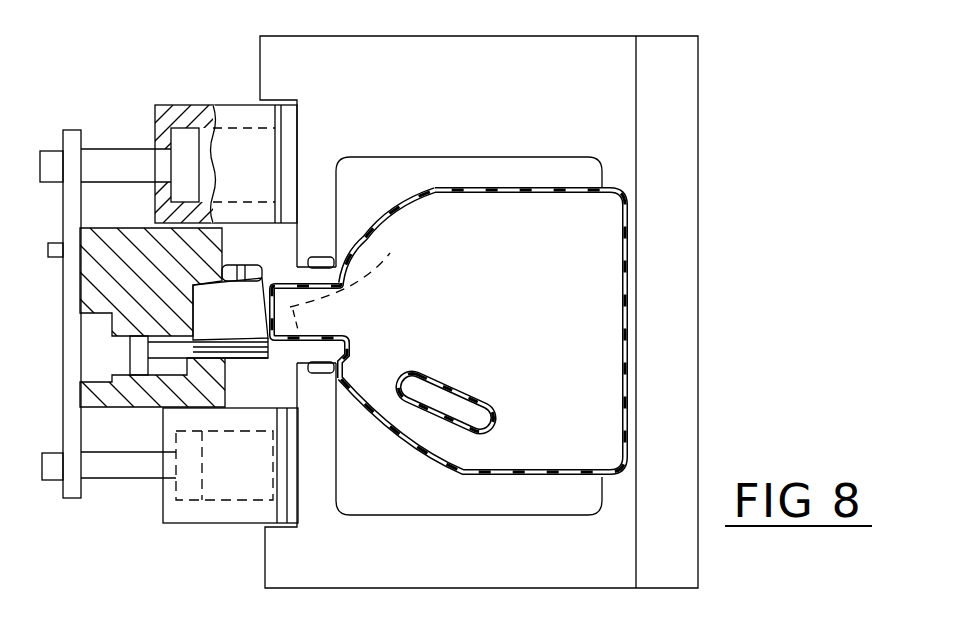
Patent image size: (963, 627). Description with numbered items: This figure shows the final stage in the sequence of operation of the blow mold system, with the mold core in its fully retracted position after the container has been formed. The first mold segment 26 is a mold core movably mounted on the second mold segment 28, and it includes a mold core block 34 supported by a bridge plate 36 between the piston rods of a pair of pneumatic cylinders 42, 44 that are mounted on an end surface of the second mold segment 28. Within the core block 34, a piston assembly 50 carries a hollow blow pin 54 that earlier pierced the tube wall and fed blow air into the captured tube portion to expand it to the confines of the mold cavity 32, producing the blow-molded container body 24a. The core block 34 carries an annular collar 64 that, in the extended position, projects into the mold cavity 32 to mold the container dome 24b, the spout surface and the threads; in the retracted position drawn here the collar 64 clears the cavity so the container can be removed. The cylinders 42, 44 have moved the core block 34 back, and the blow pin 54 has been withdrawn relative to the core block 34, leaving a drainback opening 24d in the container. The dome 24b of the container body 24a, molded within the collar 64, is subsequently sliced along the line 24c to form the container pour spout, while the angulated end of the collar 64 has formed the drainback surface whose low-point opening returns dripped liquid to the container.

The blow-molded container body 24a is at (627, 315).
The dome of container body 24b is at (335, 335).
The slicing line 24c is at (370, 260).
The drainback opening 24d is at (352, 348).
The first mold segment 26 is at (72, 298).
The second mold segment 28 is at (706, 112).
The mold cavity 32 is at (584, 196).
The mold core block 34 is at (90, 274).
The bridge plate 36 is at (72, 413).
The pneumatic cylinder 42 is at (190, 105).
The pneumatic cylinder 44 is at (212, 515).
The piston assembly 50 is at (120, 353).
The blow pin 54 is at (238, 350).
The annular collar 64 is at (245, 272).